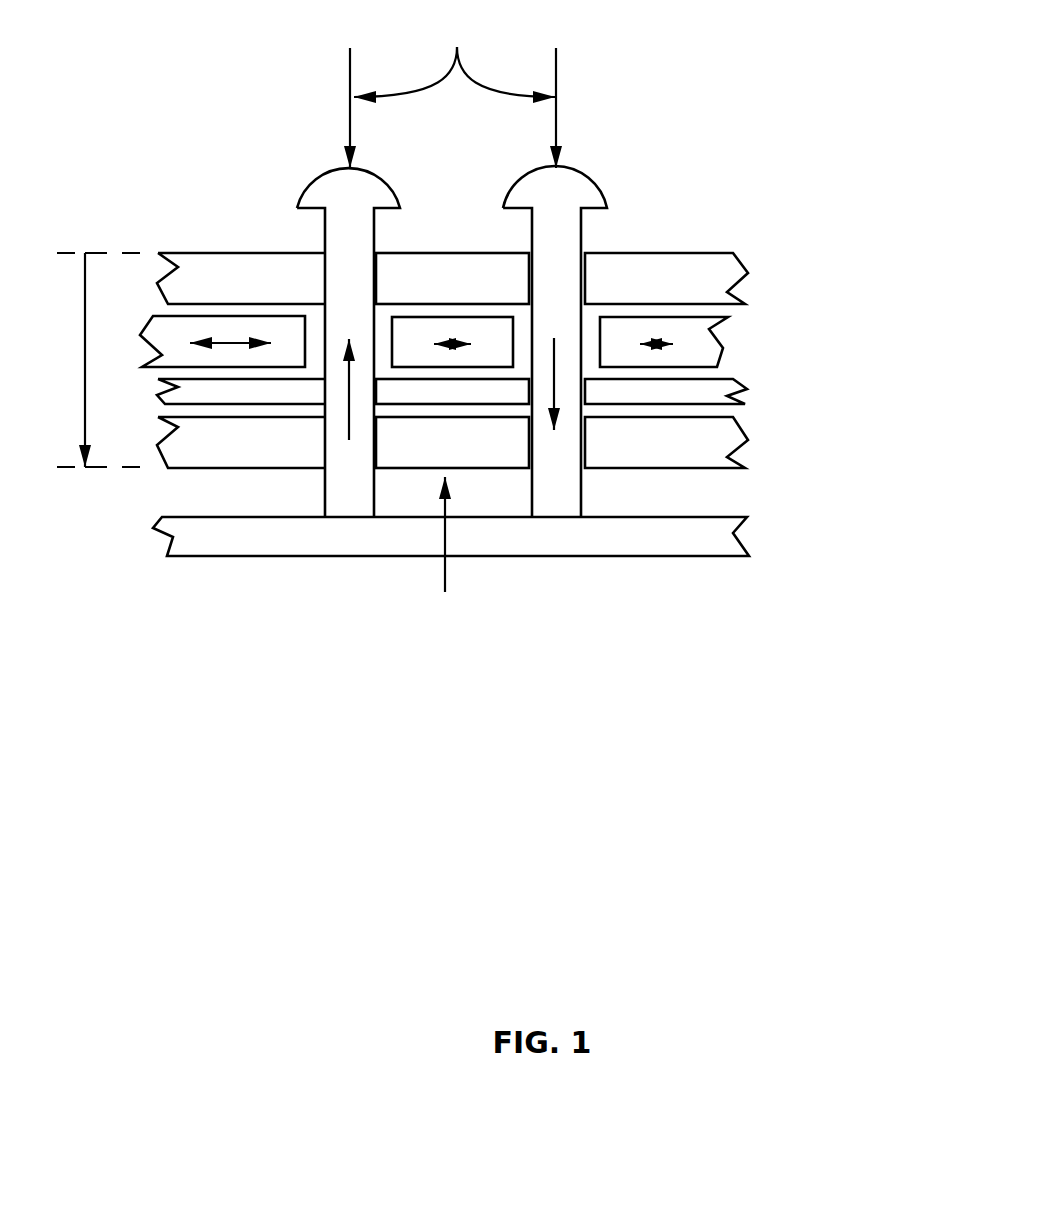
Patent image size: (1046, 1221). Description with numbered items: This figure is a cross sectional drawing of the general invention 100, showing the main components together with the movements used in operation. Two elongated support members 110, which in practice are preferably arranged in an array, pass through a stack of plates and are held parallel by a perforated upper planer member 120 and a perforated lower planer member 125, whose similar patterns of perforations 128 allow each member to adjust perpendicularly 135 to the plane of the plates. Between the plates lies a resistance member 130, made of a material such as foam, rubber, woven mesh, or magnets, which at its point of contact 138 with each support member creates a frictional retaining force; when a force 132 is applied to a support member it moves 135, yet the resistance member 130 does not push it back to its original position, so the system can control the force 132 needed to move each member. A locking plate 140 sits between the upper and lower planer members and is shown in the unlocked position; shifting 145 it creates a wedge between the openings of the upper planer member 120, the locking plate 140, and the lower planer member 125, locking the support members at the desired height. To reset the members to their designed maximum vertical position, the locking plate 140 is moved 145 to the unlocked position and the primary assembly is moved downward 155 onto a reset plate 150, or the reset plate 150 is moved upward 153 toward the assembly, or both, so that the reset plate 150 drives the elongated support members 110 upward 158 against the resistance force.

The general invention 100 is at (92, 703).
The elongated support members 110 is at (580, 168).
The perforated upper planer member 120 is at (658, 251).
The perforated lower planer member 125 is at (748, 441).
The perforations 128 is at (322, 250).
The resistance member 130 is at (748, 397).
The force 132 is at (453, 88).
The perpendicular movement 135 is at (557, 448).
The point of contact 138 is at (588, 394).
The locking plate 140 is at (724, 347).
The shifting of the locking plate 145 is at (247, 342).
The reset plate 150 is at (738, 535).
The upward movement of the reset plate 153 is at (449, 537).
The downward movement of the primary assembly 155 is at (85, 468).
The upward movement of the elongated support members 158 is at (349, 446).